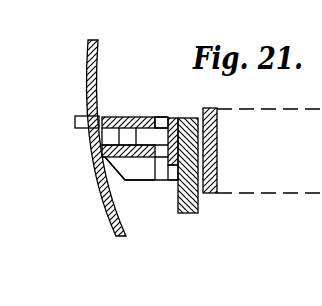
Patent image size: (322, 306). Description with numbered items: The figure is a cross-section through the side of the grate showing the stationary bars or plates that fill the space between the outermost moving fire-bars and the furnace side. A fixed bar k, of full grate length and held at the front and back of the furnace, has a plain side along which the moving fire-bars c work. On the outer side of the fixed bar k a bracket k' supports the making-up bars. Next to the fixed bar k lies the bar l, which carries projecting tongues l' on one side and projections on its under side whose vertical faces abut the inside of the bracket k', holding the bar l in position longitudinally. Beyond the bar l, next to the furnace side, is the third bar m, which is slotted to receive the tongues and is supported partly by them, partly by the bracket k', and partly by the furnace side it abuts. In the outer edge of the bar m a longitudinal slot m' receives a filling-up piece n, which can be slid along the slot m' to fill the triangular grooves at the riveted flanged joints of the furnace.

The filling-up piece n is at (75, 123).
The third bar m is at (135, 117).
The slot m' is at (108, 157).
The projecting tongue l' is at (158, 100).
The bar l is at (173, 117).
The fixed bar k is at (187, 148).
The bracket k' is at (160, 203).
The fire-bar c is at (218, 132).